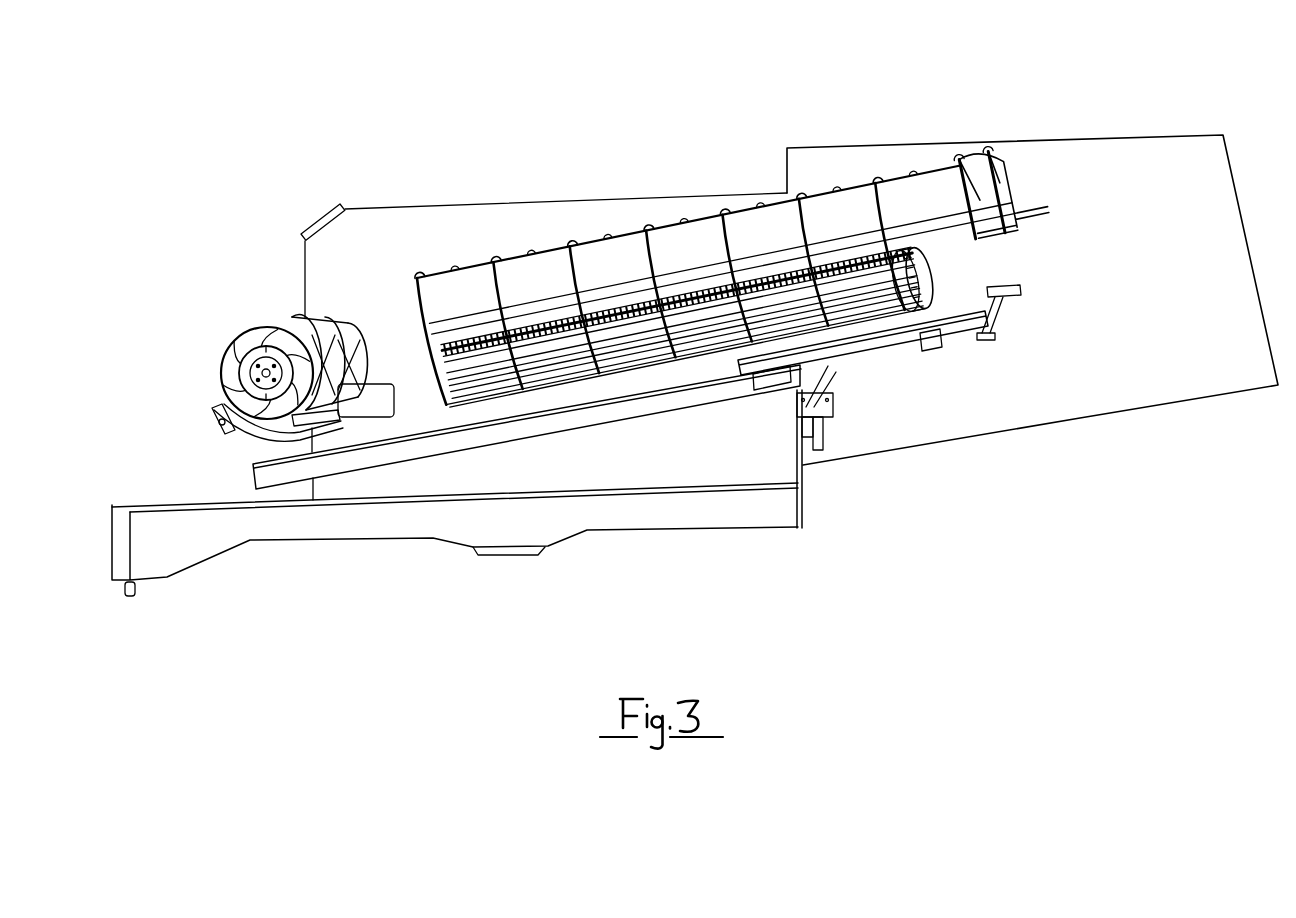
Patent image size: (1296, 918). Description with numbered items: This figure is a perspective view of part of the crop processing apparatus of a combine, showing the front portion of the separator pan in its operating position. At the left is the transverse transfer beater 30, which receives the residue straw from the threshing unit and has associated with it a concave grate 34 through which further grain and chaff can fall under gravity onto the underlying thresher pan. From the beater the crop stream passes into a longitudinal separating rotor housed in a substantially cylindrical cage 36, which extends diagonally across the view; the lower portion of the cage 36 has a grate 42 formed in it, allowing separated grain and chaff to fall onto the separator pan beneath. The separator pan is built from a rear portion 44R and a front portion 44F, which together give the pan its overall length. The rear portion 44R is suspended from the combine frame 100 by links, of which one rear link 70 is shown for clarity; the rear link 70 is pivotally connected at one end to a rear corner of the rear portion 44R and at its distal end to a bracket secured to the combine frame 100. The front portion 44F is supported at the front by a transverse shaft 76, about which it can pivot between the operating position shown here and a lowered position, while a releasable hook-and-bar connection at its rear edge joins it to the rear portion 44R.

The combine frame 100 is at (1088, 135).
The cage 36 is at (683, 222).
The grate 42 is at (935, 275).
The transfer beater 30 is at (255, 327).
The concave grate 34 is at (228, 432).
The front portion of separator pan 44F is at (651, 412).
The rear portion of separator pan 44R is at (887, 350).
The rear link 70 is at (990, 313).
The transverse shaft 76 is at (327, 478).